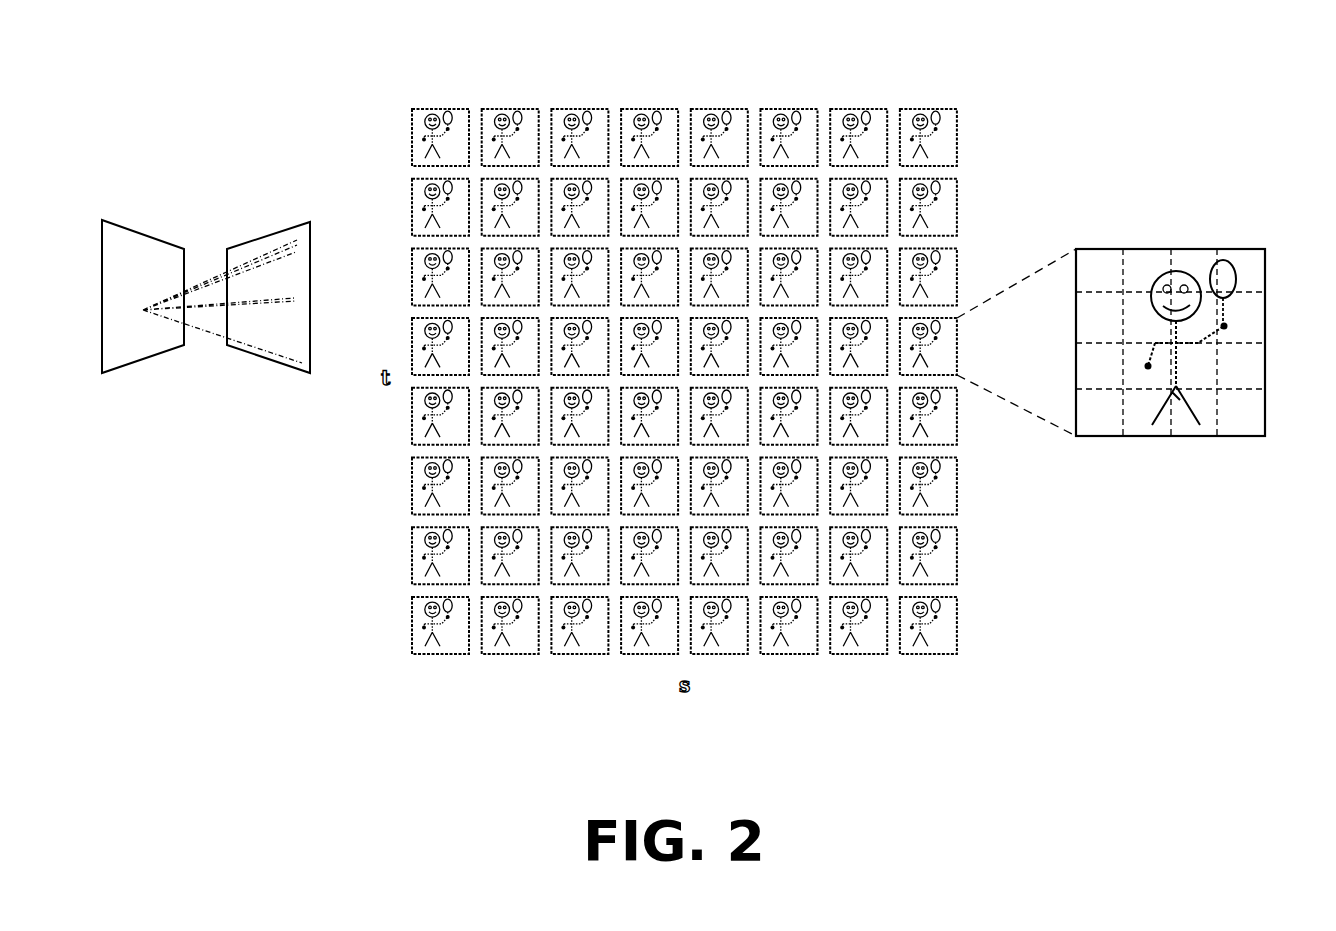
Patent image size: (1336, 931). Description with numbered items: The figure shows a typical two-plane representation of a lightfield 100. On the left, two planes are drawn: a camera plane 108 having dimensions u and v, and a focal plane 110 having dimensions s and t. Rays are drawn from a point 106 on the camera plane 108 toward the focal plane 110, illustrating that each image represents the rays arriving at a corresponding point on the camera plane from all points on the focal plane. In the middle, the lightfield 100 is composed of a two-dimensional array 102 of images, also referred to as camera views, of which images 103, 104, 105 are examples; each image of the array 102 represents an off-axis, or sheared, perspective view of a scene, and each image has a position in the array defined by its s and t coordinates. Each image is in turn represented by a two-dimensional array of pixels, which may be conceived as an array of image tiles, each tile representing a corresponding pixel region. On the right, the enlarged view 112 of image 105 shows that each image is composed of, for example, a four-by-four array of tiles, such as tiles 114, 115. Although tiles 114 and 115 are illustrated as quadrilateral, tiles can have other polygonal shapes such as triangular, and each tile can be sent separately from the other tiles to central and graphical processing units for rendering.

The lightfield 100 is at (884, 50).
The two-dimensional array of images 102 is at (779, 97).
The image 103 is at (459, 118).
The image 104 is at (600, 643).
The image 105 is at (958, 346).
The point 106 is at (143, 310).
The camera plane 108 is at (118, 373).
The focal plane 110 is at (270, 232).
The enlarged sub-aperture image 112 is at (1191, 341).
The tile 114 is at (1105, 268).
The tile 115 is at (1238, 424).